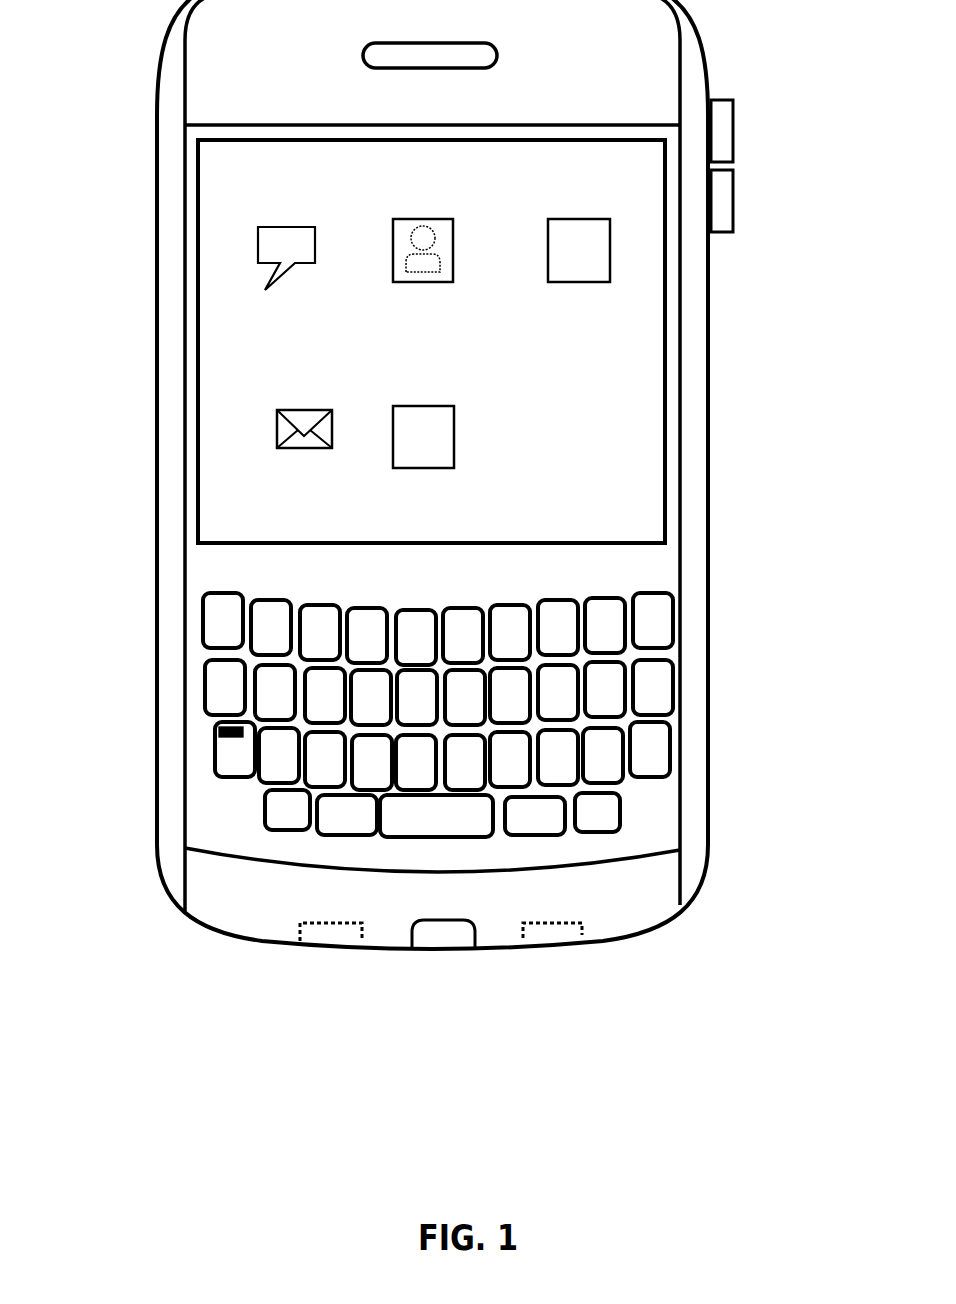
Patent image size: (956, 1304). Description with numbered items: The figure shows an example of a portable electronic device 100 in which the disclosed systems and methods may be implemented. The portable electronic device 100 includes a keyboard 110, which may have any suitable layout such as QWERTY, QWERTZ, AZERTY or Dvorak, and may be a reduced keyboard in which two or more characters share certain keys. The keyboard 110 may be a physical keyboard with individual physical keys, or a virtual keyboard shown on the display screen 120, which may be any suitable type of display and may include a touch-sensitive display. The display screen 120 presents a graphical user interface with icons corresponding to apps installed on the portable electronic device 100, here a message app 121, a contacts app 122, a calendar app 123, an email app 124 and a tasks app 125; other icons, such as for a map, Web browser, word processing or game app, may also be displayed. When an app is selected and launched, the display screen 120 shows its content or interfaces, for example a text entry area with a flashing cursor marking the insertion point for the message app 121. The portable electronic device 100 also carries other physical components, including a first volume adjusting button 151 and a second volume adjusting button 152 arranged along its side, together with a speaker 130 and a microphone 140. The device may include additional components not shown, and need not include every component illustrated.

The portable electronic device 100 is at (78, 33).
The keyboard 110 is at (605, 588).
The display screen 120 is at (593, 479).
The message app 121 is at (285, 227).
The contacts app 122 is at (425, 219).
The calendar app 123 is at (580, 219).
The email app 124 is at (305, 410).
The tasks app 125 is at (423, 406).
The speaker 130 is at (332, 935).
The microphone 140 is at (443, 944).
The first volume adjusting button 151 is at (733, 132).
The second volume adjusting button 152 is at (733, 198).